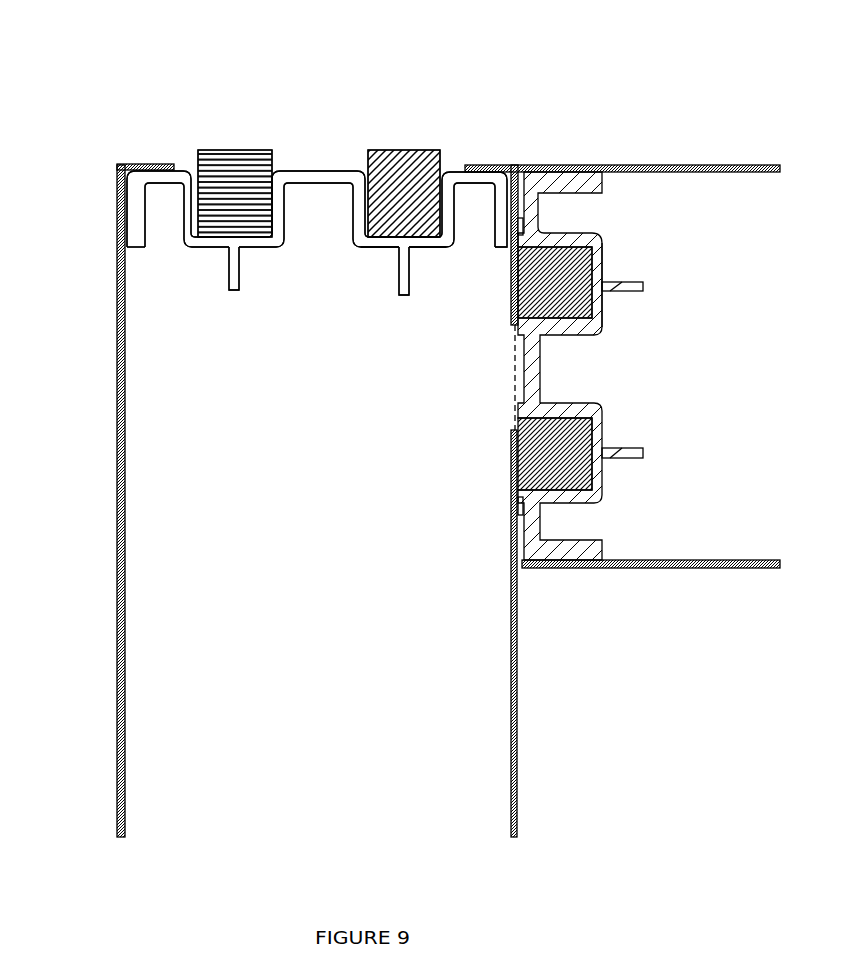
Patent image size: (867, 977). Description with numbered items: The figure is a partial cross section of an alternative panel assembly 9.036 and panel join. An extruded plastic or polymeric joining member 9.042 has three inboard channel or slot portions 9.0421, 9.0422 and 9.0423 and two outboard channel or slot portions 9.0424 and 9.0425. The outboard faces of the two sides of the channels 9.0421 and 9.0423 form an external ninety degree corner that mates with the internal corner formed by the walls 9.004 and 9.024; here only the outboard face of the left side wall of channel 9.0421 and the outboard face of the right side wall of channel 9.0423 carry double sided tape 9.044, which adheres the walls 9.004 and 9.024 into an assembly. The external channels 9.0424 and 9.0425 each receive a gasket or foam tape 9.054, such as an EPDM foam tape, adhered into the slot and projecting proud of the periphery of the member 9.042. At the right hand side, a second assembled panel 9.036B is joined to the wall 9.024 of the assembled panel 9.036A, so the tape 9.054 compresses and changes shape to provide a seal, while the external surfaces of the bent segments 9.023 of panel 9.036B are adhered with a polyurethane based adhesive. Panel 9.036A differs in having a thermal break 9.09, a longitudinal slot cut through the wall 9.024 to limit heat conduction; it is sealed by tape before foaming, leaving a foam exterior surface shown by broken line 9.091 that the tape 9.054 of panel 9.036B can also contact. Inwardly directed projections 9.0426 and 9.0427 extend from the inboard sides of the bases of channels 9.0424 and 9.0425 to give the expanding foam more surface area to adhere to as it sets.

The wall 9.004 is at (127, 410).
The bent segments 9.023 is at (155, 165).
The wall 9.024 is at (517, 510).
The heat sink arrangement 9.036 is at (266, 217).
The assembled panel 9.036A is at (385, 479).
The second assembled panel 9.036B is at (735, 266).
The joining member 9.042 is at (385, 243).
The inboard channel portion 9.0421 is at (166, 205).
The inboard channel portion 9.0422 is at (316, 195).
The inboard channel portion 9.0423 is at (479, 205).
The outboard channel portion 9.0424 is at (265, 198).
The outboard channel portion 9.0425 is at (385, 220).
The inwardly directed projection 9.0426 is at (233, 262).
The inwardly directed projection 9.0427 is at (402, 275).
The double sided tape 9.044 is at (516, 172).
The foam tape 9.054 is at (248, 205).
The thermal break 9.09 is at (514, 407).
The foam exterior surface 9.091 is at (514, 368).